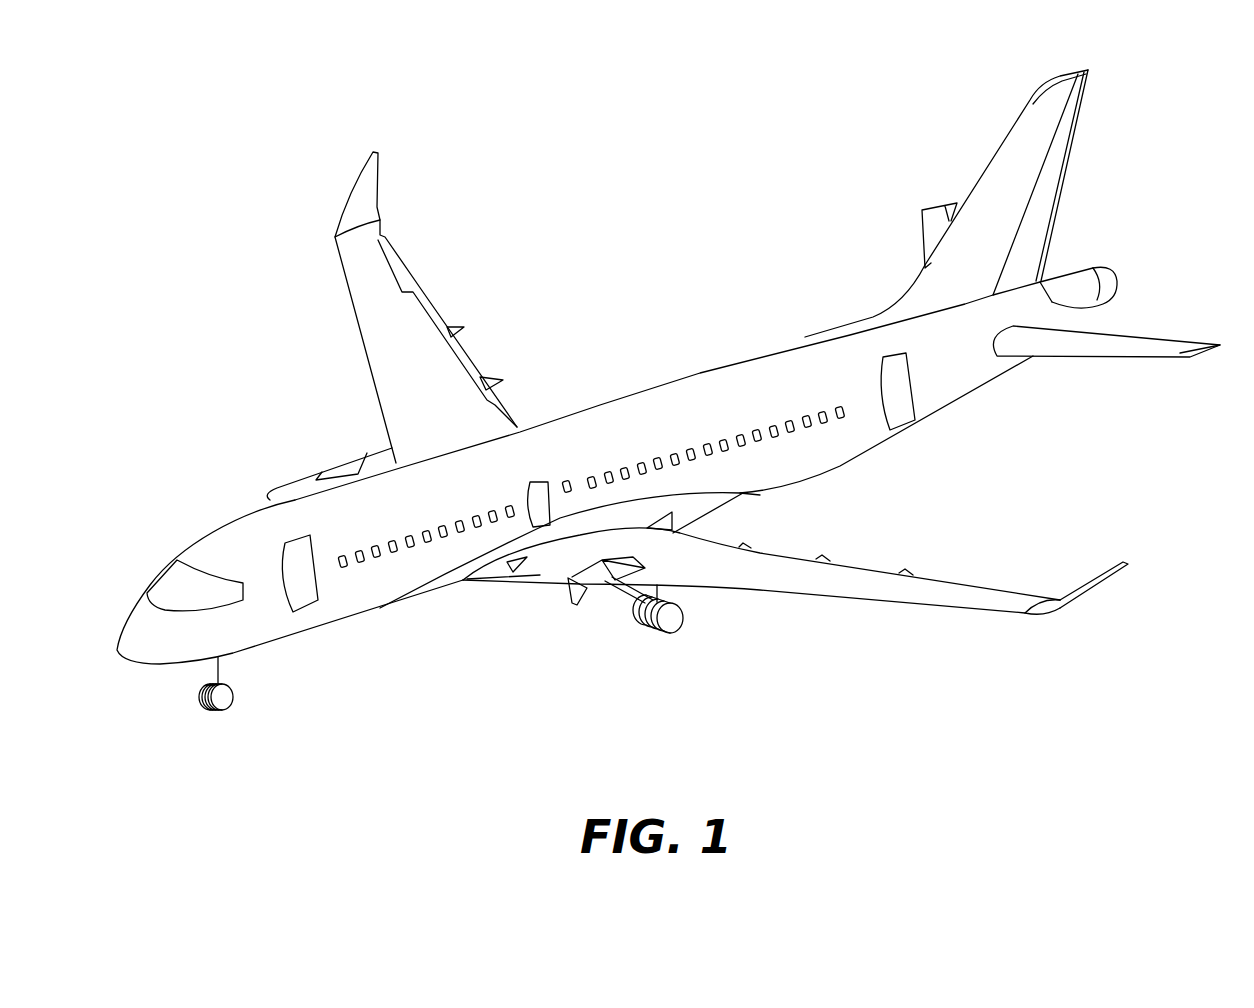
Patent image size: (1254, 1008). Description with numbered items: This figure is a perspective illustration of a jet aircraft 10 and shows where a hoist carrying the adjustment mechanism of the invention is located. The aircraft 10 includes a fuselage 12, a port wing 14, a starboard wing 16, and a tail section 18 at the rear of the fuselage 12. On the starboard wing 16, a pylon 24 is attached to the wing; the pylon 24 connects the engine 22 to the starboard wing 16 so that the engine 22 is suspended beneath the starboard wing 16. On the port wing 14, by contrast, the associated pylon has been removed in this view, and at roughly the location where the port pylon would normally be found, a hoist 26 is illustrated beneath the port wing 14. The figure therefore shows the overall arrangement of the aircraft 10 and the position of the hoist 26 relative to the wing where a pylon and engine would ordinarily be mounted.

The jet aircraft 10 is at (737, 304).
The fuselage 12 is at (633, 417).
The port wing 14 is at (800, 586).
The starboard wing 16 is at (353, 272).
The tail section 18 is at (1047, 187).
The engine 22 is at (288, 483).
The pylon 24 is at (367, 463).
The hoist 26 is at (565, 603).